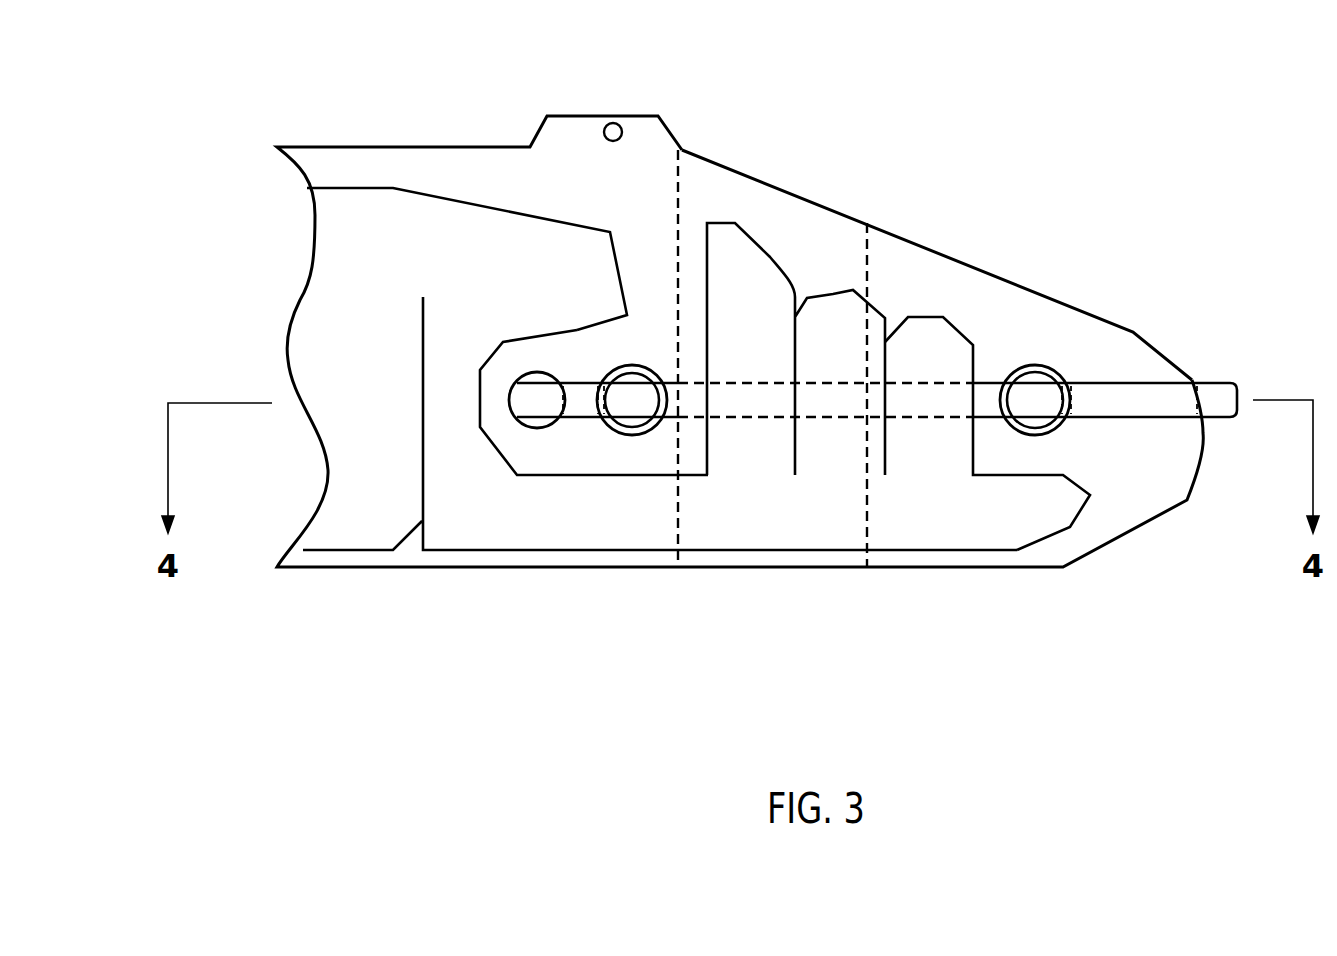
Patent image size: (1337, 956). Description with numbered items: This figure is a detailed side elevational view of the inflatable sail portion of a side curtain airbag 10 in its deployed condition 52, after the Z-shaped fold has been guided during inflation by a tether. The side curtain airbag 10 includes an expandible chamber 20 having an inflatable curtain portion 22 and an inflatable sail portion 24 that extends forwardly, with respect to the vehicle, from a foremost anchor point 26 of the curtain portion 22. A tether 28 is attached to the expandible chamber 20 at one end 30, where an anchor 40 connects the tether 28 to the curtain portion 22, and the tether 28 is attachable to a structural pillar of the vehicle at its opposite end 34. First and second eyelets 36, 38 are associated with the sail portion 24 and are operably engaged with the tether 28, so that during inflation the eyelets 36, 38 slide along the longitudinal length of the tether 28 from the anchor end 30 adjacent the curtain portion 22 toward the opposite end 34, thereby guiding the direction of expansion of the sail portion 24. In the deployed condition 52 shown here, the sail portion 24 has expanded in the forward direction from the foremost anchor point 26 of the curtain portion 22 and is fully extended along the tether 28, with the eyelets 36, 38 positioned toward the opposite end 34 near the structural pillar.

The side curtain airbag 10 is at (327, 132).
The expandible chamber 20 is at (470, 158).
The inflatable curtain portion 22 is at (447, 530).
The inflatable sail portion 24 is at (918, 517).
The foremost anchor point 26 is at (604, 135).
The tether 28 is at (835, 423).
The one end of tether 30 is at (540, 400).
The opposite end of tether 34 is at (1215, 390).
The eyelet 36 is at (1037, 435).
The eyelet 38 is at (632, 435).
The anchor 40 is at (537, 428).
The deployed condition 52 is at (1036, 272).